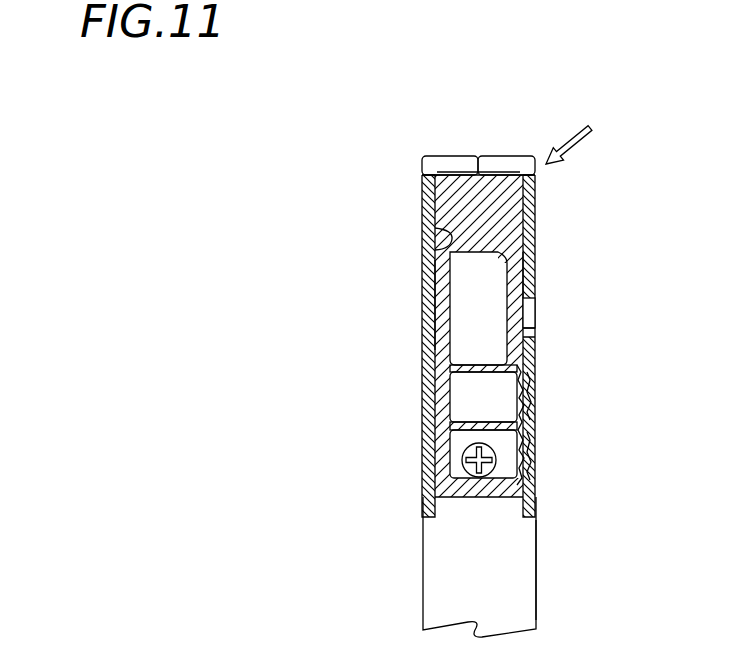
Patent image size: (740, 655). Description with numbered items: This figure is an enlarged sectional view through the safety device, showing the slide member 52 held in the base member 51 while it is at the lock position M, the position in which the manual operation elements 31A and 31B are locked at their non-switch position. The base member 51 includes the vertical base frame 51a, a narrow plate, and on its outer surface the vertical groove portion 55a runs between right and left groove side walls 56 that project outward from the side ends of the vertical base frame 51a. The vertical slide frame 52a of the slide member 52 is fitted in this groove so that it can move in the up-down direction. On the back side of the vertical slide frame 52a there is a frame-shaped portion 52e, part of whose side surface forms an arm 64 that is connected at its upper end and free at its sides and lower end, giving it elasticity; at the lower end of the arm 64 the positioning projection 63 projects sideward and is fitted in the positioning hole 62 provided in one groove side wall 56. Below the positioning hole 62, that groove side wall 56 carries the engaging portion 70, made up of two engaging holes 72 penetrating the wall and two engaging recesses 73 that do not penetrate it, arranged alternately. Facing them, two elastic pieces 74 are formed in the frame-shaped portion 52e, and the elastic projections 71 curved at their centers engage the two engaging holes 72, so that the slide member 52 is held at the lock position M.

The slide member 52 is at (438, 104).
The manual operation element 31A is at (437, 163).
The manual operation element 31B is at (512, 163).
The lock position M is at (583, 129).
The groove side wall 56 is at (428, 208).
The vertical groove portion 55a is at (436, 252).
The frame-shaped portion 52e is at (428, 278).
The vertical slide frame 52a is at (428, 329).
The arm 64 is at (533, 273).
The positioning hole 62 is at (530, 312).
The positioning projection 63 is at (530, 334).
The engaging portion 70 is at (510, 430).
The elastic piece 74 is at (442, 374).
The elastic projection 71 is at (514, 396).
The engaging recess 73 is at (526, 370).
The engaging hole 72 is at (530, 395).
The base member 51 is at (378, 579).
The vertical base frame 51a is at (503, 578).